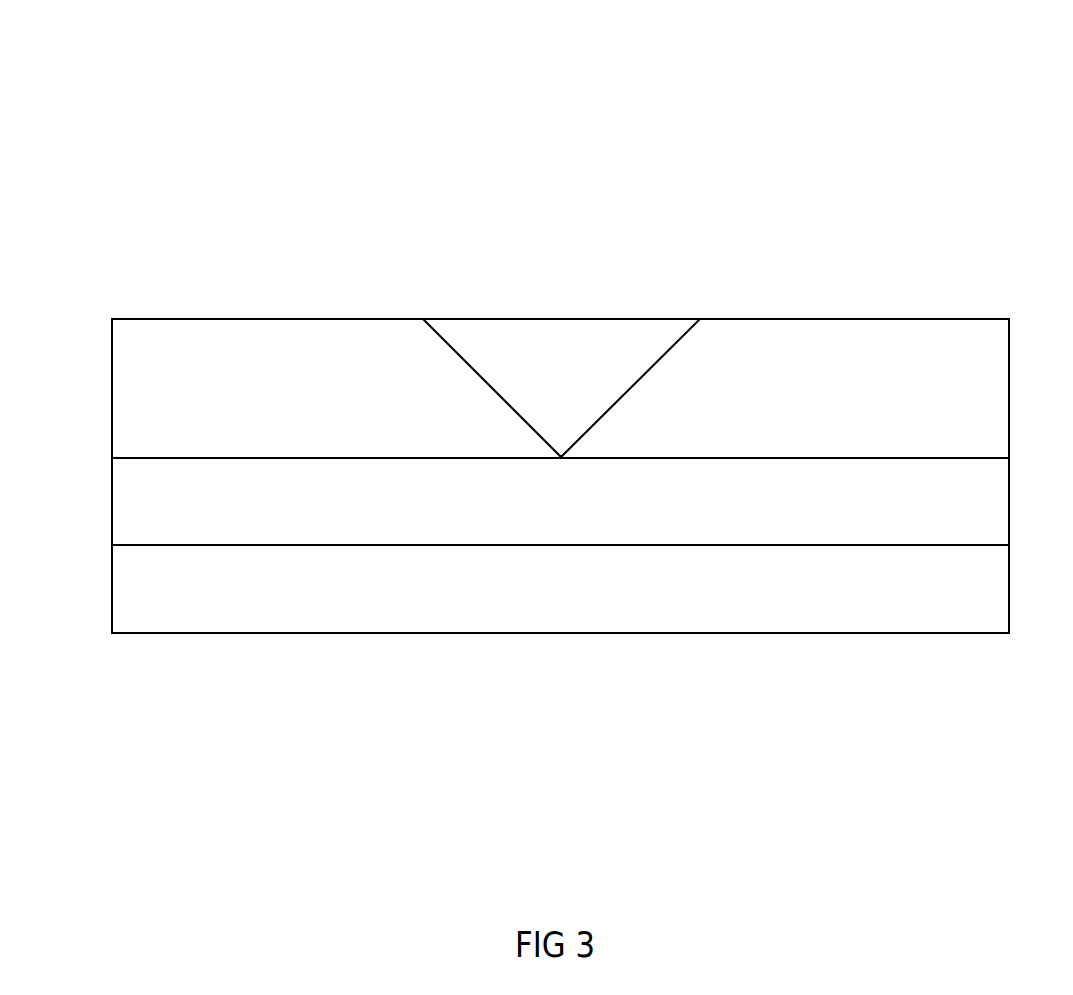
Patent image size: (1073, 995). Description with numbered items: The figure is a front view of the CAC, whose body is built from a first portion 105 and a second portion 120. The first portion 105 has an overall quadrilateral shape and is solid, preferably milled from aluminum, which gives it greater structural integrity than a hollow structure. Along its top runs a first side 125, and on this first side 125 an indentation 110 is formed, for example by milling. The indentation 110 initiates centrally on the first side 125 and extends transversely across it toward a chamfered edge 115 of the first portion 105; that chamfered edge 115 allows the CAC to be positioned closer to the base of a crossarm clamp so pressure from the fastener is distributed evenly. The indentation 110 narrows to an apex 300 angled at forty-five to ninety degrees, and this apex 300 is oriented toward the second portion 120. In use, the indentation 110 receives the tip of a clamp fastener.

The first portion 105 is at (100, 108).
The indentation 110 is at (568, 345).
The chamfered edge 115 is at (807, 435).
The second portion 120 is at (178, 606).
The first side 125 is at (841, 317).
The apex 300 is at (561, 460).